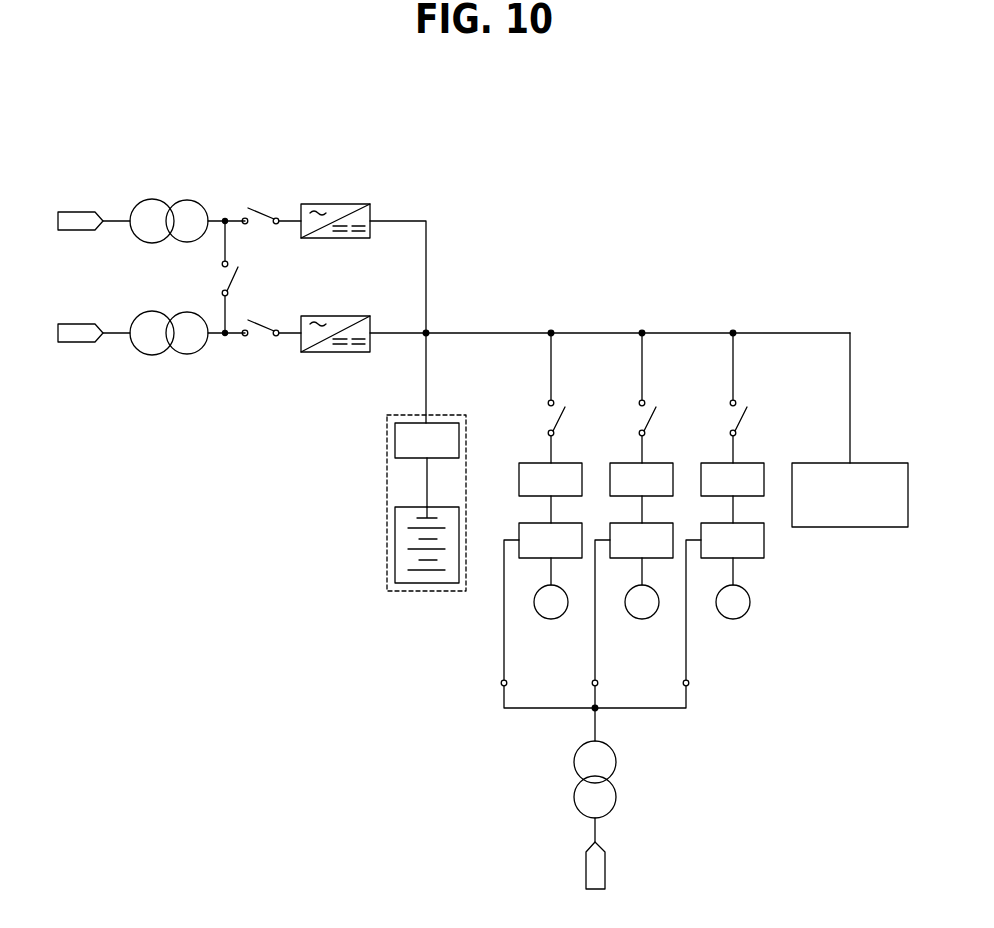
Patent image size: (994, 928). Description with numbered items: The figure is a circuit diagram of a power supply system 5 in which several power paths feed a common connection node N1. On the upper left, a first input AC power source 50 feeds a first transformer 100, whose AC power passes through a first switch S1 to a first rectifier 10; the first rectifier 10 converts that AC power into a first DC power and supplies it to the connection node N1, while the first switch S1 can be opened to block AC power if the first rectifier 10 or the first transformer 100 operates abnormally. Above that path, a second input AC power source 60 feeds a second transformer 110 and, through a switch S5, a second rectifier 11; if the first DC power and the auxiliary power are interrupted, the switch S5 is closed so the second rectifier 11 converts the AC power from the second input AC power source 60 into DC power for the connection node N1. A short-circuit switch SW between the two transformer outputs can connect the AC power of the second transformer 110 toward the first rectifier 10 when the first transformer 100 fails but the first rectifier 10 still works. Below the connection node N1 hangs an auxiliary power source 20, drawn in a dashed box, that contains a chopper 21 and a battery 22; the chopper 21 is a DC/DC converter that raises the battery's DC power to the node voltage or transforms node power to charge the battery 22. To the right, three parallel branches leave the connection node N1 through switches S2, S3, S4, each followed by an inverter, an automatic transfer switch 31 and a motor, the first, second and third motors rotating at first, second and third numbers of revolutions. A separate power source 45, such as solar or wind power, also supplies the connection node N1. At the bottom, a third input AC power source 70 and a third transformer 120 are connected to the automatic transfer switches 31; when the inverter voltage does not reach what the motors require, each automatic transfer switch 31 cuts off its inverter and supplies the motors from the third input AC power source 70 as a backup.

The power supply system 5 is at (524, 110).
The second input AC power source 60 is at (77, 208).
The second transformer 110 is at (152, 199).
The switch S5 is at (260, 230).
The second rectifier 11 is at (335, 203).
The short-circuit switch SW is at (213, 277).
The first input AC power source 50 is at (77, 321).
The first transformer 100 is at (152, 311).
The first switch S1 is at (260, 342).
The first rectifier 10 is at (335, 315).
The connection node N1 is at (440, 321).
The auxiliary power source 20 is at (406, 530).
The chopper 21 is at (395, 442).
The battery 22 is at (395, 546).
The switch S2 is at (568, 384).
The switch S3 is at (659, 384).
The switch S4 is at (750, 384).
The automatic transfer switch 31 is at (519, 535).
The power source 45 is at (850, 528).
The third transformer 120 is at (617, 795).
The third input AC power source 70 is at (606, 868).